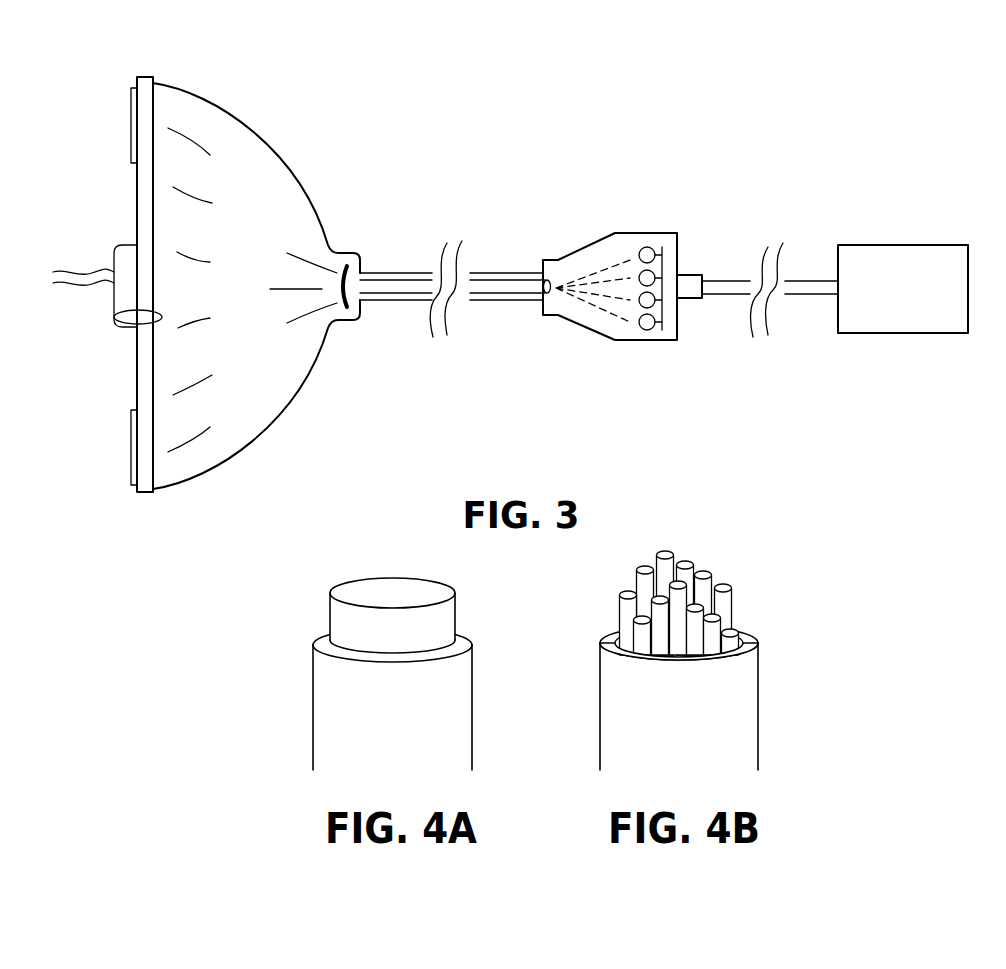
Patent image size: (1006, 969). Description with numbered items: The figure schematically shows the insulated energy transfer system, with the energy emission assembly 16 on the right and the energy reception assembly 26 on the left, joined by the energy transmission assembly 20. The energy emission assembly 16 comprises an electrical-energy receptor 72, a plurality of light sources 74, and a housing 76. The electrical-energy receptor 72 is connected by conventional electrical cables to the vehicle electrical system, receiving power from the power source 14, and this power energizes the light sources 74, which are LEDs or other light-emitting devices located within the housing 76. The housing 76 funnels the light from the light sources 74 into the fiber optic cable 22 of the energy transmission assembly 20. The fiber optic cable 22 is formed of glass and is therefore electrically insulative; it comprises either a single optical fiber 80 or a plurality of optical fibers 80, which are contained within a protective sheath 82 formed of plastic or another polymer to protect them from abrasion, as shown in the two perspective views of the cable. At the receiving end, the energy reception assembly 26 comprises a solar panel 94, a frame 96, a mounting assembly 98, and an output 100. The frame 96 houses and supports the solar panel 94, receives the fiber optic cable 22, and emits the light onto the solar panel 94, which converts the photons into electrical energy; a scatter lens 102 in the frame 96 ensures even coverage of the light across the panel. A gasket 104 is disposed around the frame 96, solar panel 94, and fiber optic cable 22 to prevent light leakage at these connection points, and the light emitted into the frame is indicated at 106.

In FIG. 3, the power source 14 is at (938, 333).
In FIG. 3, the energy emission assembly 16 is at (638, 265).
In FIG. 3, the energy transmission assembly 20 is at (398, 251).
In FIG. 3, the fiber optic cable 22 is at (415, 310).
In FIG. 4A, the fiber optic cable 22 is at (371, 674).
In FIG. 4B, the fiber optic cable 22 is at (713, 641).
In FIG. 3, the energy reception assembly 26 is at (282, 428).
In FIG. 3, the electrical-energy receptor 72 is at (688, 282).
In FIG. 3, the light source 74 is at (647, 325).
In FIG. 3, the housing 76 is at (590, 332).
In FIG. 3, the optical fiber 80 is at (493, 293).
In FIG. 4A, the optical fiber 80 is at (450, 618).
In FIG. 4B, the optical fiber 80 is at (665, 551).
In FIG. 3, the protective sheath 82 is at (467, 305).
In FIG. 4A, the protective sheath 82 is at (460, 687).
In FIG. 4B, the protective sheath 82 is at (679, 643).
In FIG. 3, the solar panel 94 is at (143, 368).
In FIG. 3, the frame 96 is at (242, 127).
In FIG. 3, the mounting assembly 98 is at (131, 122).
In FIG. 3, the output 100 is at (68, 270).
In FIG. 3, the scatter lens 102 is at (338, 262).
In FIG. 3, the gasket 104 is at (117, 323).
In FIG. 3, the light emitting end 106 is at (377, 312).